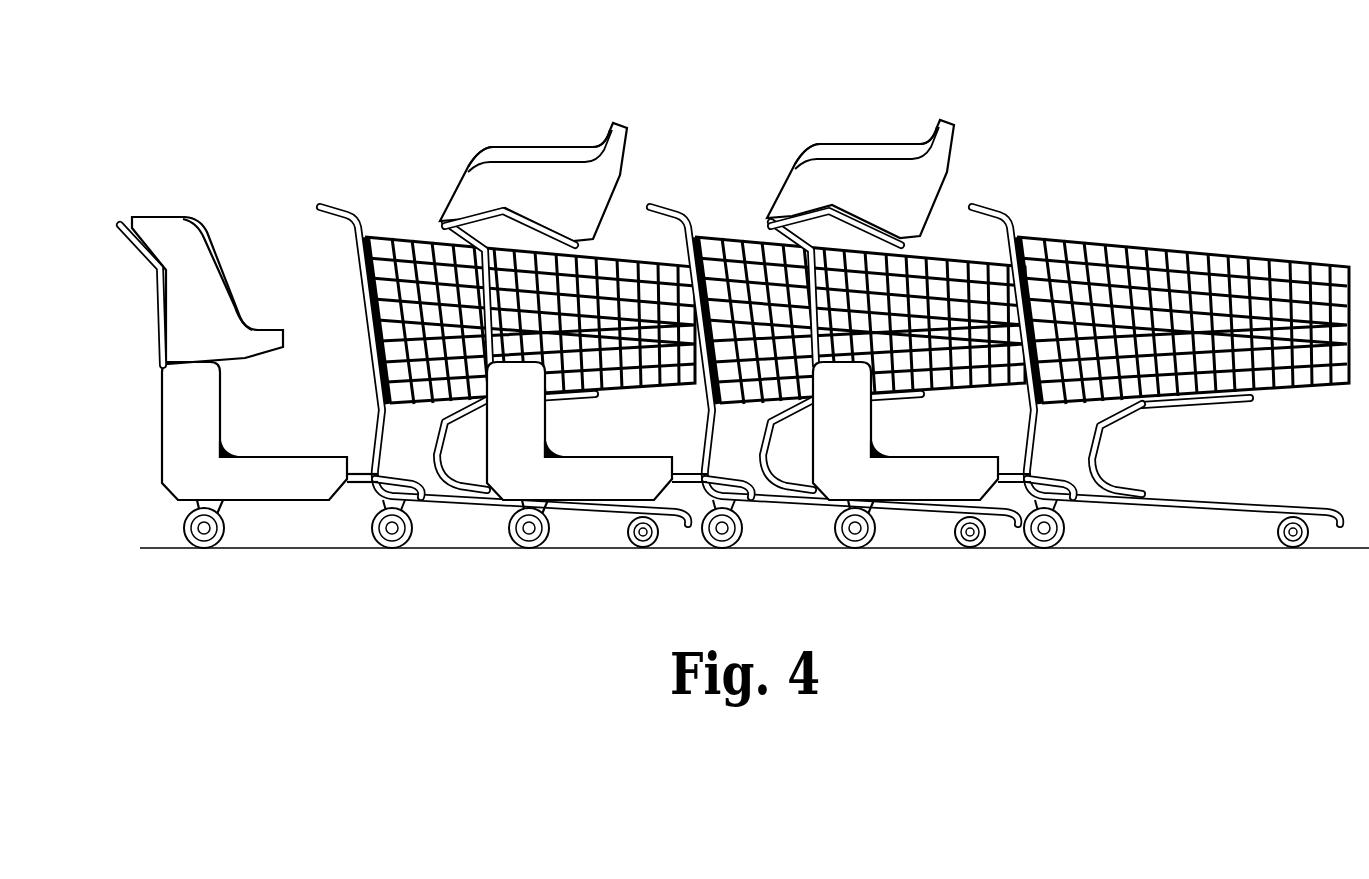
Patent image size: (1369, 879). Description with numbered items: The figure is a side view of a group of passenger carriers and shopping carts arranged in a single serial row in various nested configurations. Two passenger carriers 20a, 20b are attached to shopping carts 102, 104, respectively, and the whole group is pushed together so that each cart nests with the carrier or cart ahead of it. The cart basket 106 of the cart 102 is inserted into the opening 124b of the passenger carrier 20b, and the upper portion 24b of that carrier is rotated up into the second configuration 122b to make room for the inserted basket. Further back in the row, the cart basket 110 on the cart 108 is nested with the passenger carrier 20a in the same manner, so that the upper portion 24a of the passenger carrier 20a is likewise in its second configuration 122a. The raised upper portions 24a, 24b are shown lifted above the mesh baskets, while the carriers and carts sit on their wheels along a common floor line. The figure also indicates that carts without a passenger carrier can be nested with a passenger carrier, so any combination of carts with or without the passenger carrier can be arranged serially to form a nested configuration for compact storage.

The shopping cart 102 is at (950, 238).
The shopping cart 104 is at (1192, 236).
The cart basket 106 is at (759, 428).
The cart 108 is at (338, 268).
The cart basket 110 is at (400, 236).
The passenger carrier 20a is at (533, 134).
The upper portion 24a is at (527, 146).
The second configuration 122a is at (571, 146).
The passenger carrier 20b is at (868, 159).
The upper portion 24b is at (940, 124).
The second configuration 122b is at (862, 148).
The opening 124b is at (790, 283).